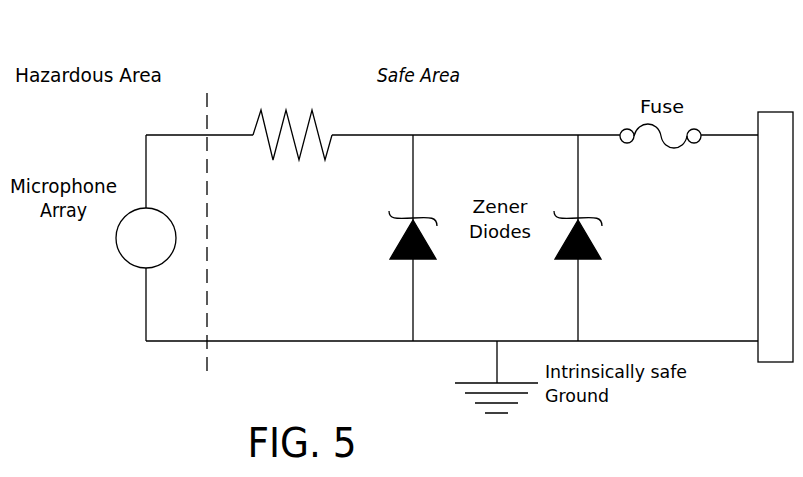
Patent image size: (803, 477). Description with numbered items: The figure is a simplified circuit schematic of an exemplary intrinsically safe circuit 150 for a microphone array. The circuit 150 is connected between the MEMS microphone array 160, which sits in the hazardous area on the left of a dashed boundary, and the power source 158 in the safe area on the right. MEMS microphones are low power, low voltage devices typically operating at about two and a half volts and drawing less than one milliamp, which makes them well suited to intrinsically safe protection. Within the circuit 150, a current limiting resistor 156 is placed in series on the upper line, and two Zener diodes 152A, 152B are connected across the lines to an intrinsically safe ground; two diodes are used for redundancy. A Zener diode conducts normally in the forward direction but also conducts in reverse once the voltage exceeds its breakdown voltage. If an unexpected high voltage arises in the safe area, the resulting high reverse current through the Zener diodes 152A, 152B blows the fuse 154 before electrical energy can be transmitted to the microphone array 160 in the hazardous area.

The intrinsically safe circuit 150 is at (498, 80).
The Zener diode 152A is at (388, 249).
The Zener diode 152B is at (598, 242).
The fuse 154 is at (675, 153).
The current limiting resistor 156 is at (296, 165).
The power source 158 is at (773, 110).
The MEMS microphone array 160 is at (113, 248).